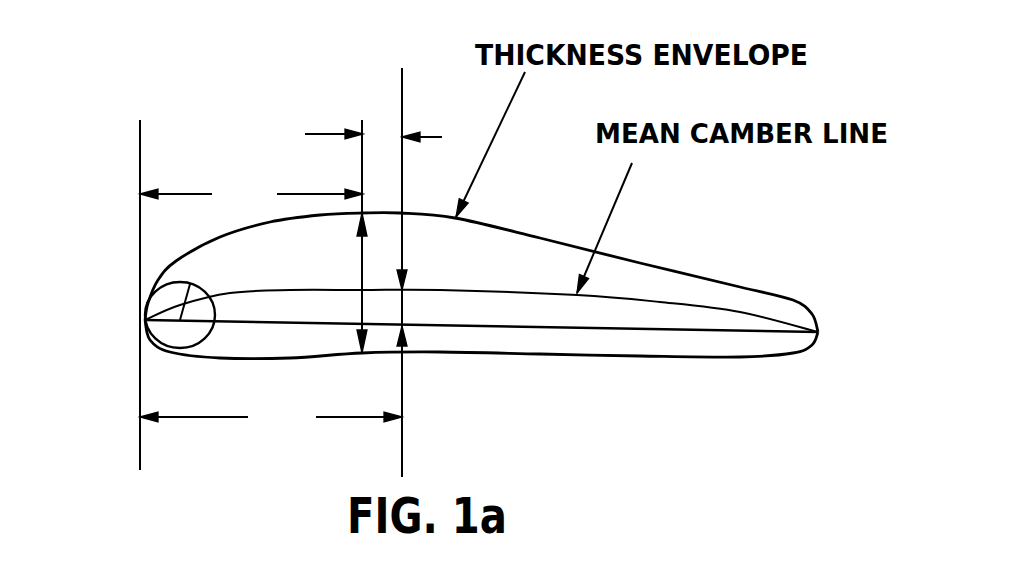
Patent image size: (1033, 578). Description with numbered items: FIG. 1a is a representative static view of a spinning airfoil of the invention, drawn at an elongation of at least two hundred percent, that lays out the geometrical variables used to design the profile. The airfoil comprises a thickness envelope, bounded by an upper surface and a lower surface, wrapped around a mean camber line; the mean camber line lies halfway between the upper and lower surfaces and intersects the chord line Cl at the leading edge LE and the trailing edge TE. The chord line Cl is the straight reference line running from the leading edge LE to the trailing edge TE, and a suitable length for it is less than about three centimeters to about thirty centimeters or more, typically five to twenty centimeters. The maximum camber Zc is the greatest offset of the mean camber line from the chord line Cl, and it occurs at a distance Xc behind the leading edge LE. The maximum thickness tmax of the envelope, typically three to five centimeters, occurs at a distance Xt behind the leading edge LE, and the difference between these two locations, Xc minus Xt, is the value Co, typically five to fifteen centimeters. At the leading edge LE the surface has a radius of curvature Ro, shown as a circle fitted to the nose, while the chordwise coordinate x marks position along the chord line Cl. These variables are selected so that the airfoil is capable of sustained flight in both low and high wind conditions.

The maximum camber Zc is at (393, 246).
The difference between maximum camber and maximum thickness locations Co is at (352, 130).
The distance of maximum thickness behind the leading edge Xt is at (251, 192).
The maximum thickness tmax is at (321, 236).
The chordwise coordinate x is at (282, 306).
The distance of maximum camber behind the leading edge Xc is at (271, 414).
The radius of curvature of the surface at the leading edge Ro is at (180, 307).
The leading edge LE is at (96, 315).
The trailing edge TE is at (868, 334).
The chord line Cl is at (489, 326).